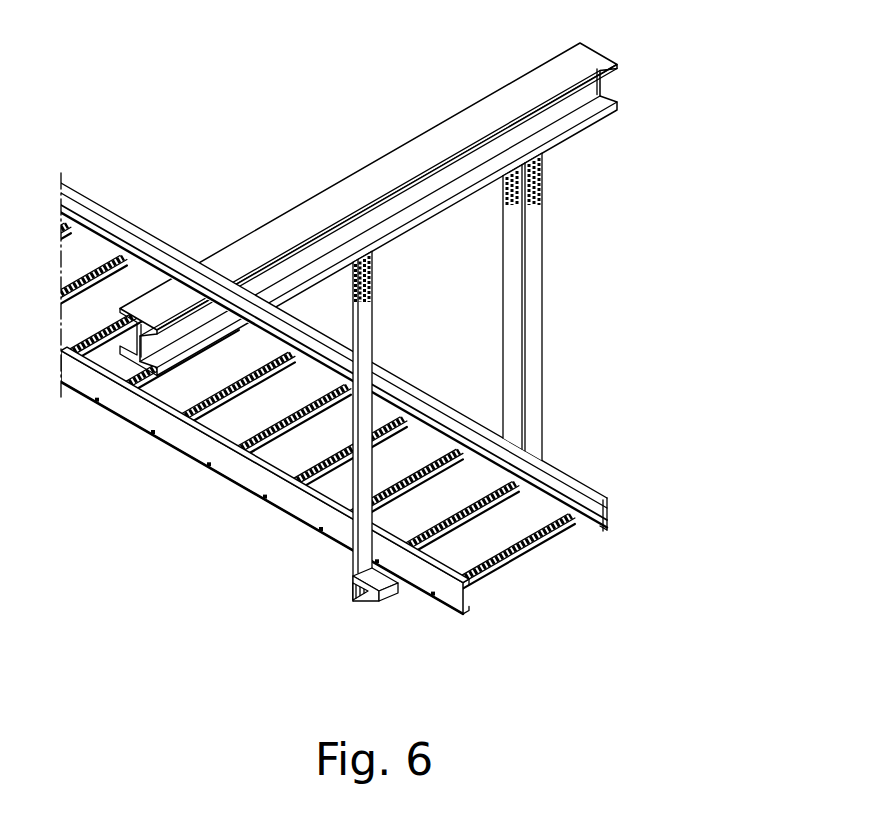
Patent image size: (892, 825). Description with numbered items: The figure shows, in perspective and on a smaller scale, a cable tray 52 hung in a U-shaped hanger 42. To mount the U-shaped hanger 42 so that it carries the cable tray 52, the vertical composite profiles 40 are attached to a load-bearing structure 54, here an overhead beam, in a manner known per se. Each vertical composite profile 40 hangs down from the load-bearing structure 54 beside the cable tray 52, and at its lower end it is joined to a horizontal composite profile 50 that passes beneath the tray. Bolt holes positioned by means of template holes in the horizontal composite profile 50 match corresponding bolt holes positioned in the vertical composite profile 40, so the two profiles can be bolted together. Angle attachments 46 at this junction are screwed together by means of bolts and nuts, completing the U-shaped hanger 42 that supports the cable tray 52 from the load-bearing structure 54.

The load-bearing structure 54 is at (380, 167).
The U-shaped hanger 42 is at (496, 412).
The vertical composite profile 40 is at (527, 360).
The cable tray 52 is at (570, 498).
The angle attachment 46 is at (353, 594).
The horizontal composite profile 50 is at (375, 578).